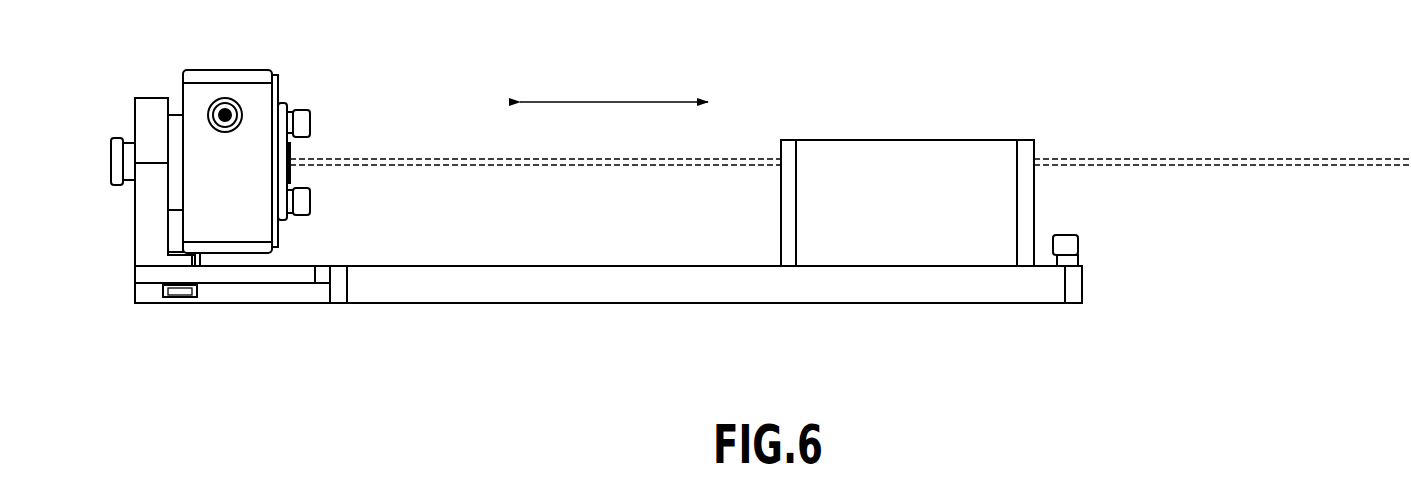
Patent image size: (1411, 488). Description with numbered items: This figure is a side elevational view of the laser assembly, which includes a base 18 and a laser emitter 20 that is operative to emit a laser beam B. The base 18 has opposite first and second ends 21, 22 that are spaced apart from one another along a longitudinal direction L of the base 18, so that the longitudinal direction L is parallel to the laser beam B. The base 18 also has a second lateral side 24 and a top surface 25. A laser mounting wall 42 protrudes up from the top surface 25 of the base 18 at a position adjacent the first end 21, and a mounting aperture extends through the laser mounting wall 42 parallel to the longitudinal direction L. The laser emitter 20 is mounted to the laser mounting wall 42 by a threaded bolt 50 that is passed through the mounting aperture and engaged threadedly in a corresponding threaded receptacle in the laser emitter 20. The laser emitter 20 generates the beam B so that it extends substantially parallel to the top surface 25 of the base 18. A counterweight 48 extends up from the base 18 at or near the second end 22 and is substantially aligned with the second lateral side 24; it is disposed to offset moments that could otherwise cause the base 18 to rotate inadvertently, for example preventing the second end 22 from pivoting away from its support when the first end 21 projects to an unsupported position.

The base 18 is at (618, 300).
The laser emitter 20 is at (242, 93).
The first end 21 is at (133, 275).
The second end 22 is at (1082, 283).
The second lateral side 24 is at (922, 293).
The top surface 25 is at (537, 265).
The laser mounting wall 42 is at (152, 120).
The counterweight 48 is at (960, 153).
The threaded bolt 50 is at (122, 185).
The laser beam B is at (1208, 162).
The longitudinal direction L is at (620, 102).